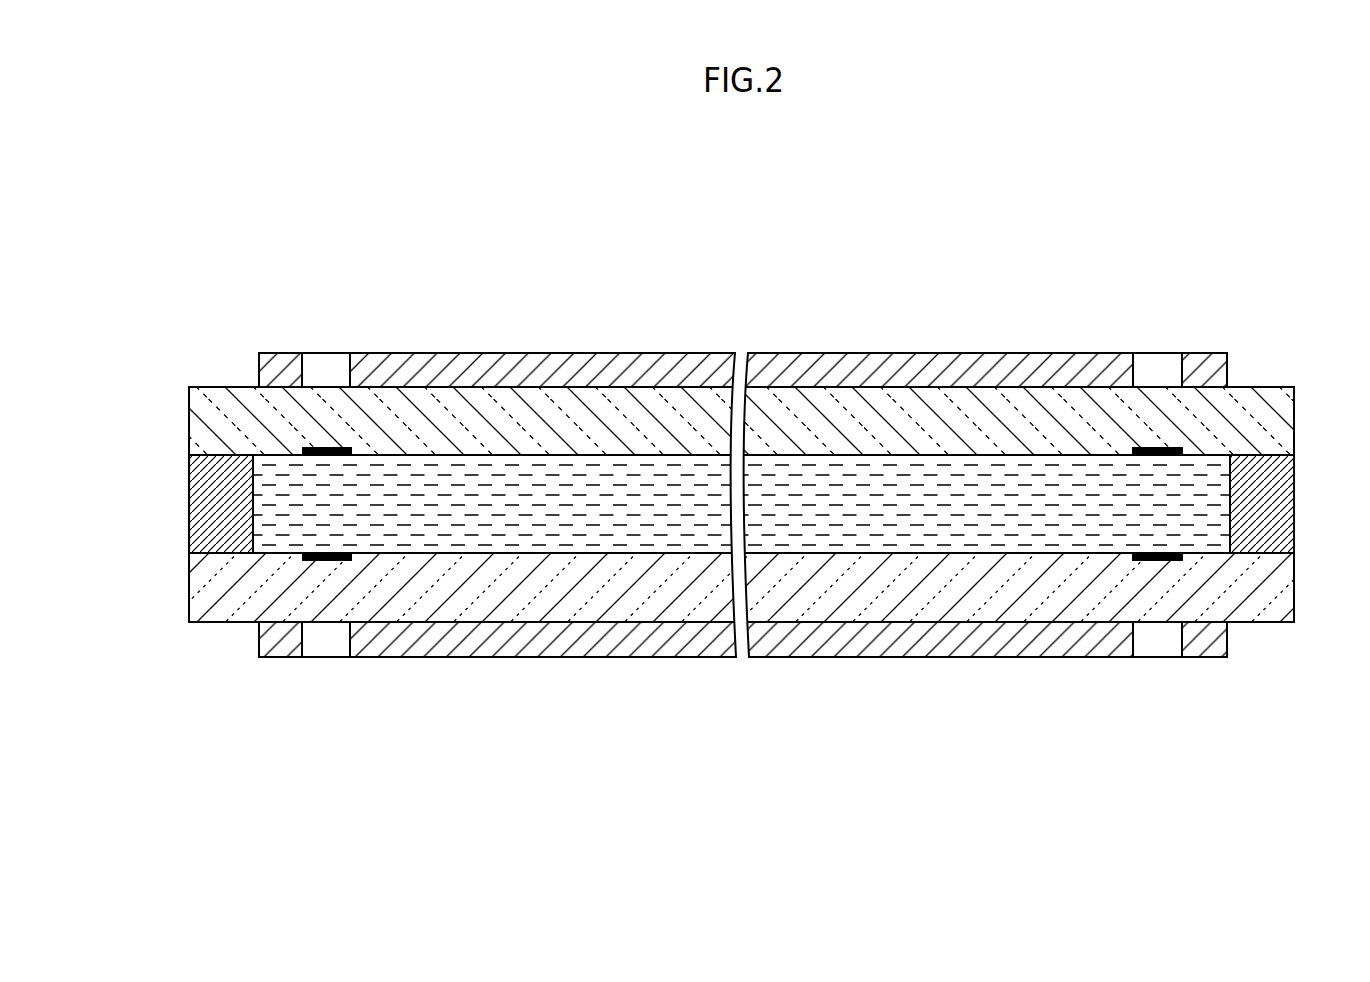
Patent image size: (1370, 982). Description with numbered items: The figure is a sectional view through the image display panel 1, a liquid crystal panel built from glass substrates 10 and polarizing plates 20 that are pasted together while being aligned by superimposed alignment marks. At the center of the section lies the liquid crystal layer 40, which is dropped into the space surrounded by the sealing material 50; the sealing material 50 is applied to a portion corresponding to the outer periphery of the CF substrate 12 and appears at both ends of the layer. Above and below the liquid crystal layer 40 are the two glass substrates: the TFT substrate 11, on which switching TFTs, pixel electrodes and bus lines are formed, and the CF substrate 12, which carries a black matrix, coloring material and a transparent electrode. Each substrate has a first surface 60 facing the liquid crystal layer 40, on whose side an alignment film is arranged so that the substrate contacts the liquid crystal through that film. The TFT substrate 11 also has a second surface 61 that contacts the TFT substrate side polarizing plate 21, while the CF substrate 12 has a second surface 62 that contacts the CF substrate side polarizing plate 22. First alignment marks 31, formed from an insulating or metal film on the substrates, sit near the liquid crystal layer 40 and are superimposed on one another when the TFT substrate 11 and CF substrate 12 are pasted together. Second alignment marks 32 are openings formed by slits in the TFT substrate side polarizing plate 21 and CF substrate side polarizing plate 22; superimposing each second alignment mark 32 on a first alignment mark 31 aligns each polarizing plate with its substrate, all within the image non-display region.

The image display panel 1 is at (785, 292).
The glass substrate 10 is at (741, 503).
The TFT substrate 11 is at (983, 578).
The CF substrate 12 is at (955, 425).
The polarizing plate 20 is at (741, 508).
The TFT substrate side polarizing plate 21 is at (483, 640).
The CF substrate side polarizing plate 22 is at (468, 372).
The first alignment mark 31 is at (320, 447).
The second alignment mark 32 is at (302, 366).
The liquid crystal layer 40 is at (1180, 510).
The sealing material 50 is at (1262, 490).
The first surface 60 is at (888, 456).
The second surface 61 is at (695, 625).
The second surface 62 is at (1082, 385).